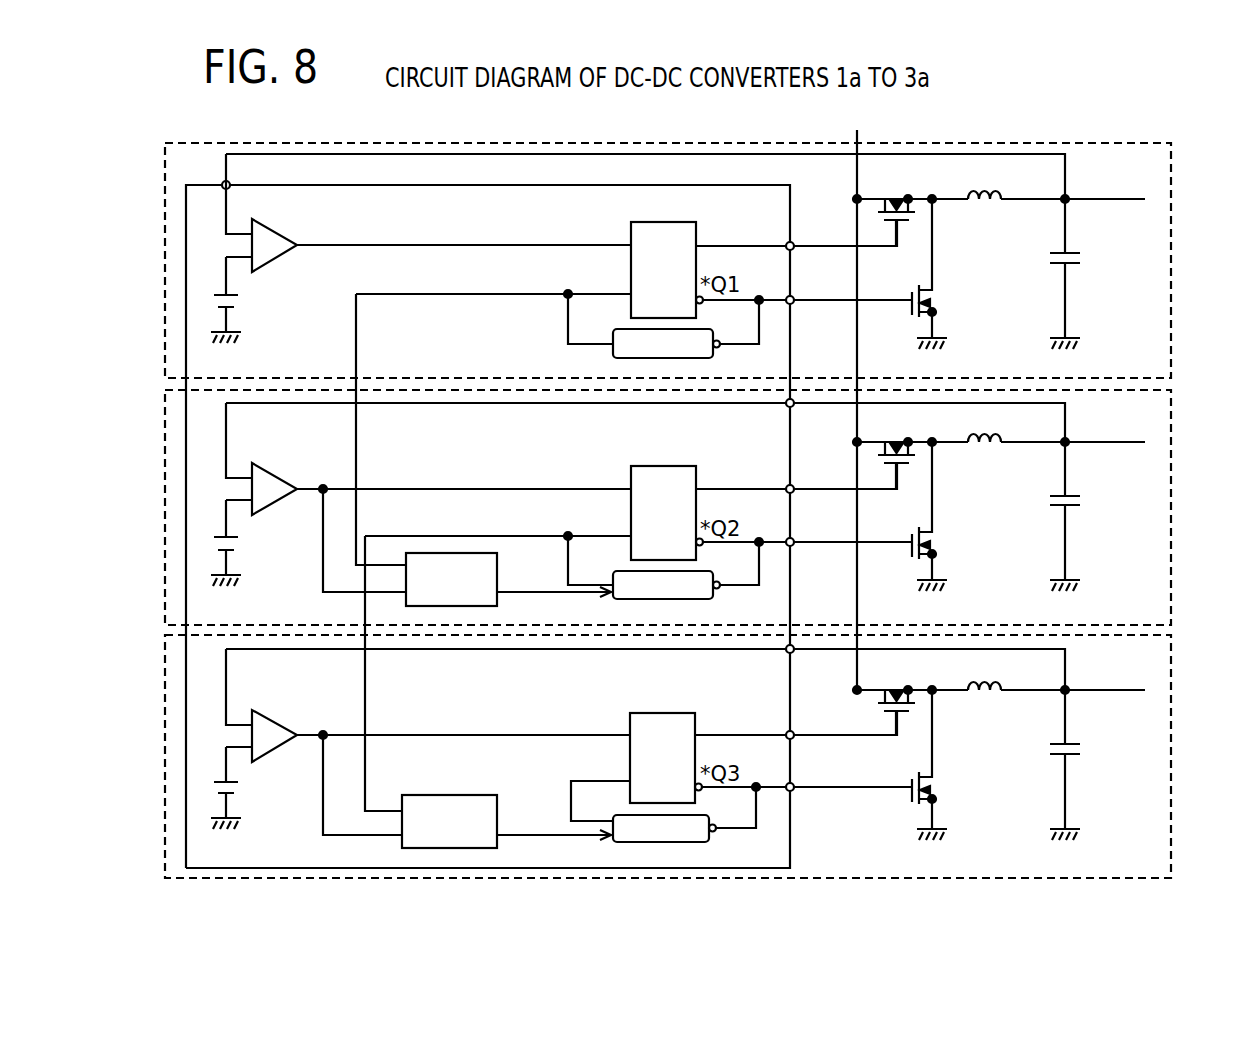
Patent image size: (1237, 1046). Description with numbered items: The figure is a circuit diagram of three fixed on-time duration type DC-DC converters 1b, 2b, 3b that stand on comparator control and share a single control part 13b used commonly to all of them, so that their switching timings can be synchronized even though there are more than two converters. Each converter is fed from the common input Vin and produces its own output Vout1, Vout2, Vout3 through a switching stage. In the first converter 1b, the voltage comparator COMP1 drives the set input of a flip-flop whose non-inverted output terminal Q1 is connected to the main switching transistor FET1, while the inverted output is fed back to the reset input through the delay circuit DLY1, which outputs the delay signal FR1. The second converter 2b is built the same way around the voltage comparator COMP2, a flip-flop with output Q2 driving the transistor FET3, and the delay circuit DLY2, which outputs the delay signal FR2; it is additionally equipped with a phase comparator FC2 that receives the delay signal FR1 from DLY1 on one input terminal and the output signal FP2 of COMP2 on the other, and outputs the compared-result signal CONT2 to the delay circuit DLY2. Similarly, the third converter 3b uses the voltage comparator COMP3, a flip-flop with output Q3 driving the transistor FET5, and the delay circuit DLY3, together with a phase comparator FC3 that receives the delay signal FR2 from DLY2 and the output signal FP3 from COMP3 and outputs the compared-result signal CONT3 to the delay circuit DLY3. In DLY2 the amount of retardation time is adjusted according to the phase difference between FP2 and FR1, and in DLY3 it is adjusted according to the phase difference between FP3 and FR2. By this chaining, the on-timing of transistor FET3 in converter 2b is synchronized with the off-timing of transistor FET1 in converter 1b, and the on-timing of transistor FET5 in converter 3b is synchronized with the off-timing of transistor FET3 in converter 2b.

The control part 13b is at (482, 185).
The DC-DC converter 1b is at (1171, 273).
The DC-DC converter 2b is at (1171, 518).
The DC-DC converter 3b is at (1171, 771).
The voltage comparator COMP1 is at (259, 248).
The voltage comparator COMP2 is at (259, 494).
The voltage comparator COMP3 is at (259, 739).
The main switching transistor FET1 is at (900, 260).
The transistor FET3 is at (900, 503).
The transistor FET5 is at (900, 752).
The delay circuit DLY1 is at (690, 358).
The delay circuit DLY2 is at (690, 599).
The delay circuit DLY3 is at (688, 842).
The phase comparator FC2 is at (497, 565).
The phase comparator FC3 is at (497, 811).
The output signal FP2 is at (354, 527).
The output signal FP3 is at (352, 771).
The compared-result signal CONT2 is at (554, 603).
The compared-result signal CONT3 is at (554, 846).
The delay signal FR1 is at (493, 317).
The delay signal FR2 is at (498, 558).
The non-inverted output terminal Q1 is at (597, 269).
The flip-flop output Q2 is at (597, 511).
The flip-flop output Q3 is at (597, 756).
The input voltage Vin is at (861, 396).
The output voltage Vout1 is at (1038, 262).
The output voltage Vout2 is at (1038, 504).
The output voltage Vout3 is at (1038, 753).